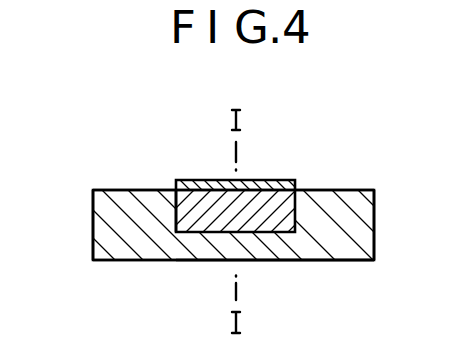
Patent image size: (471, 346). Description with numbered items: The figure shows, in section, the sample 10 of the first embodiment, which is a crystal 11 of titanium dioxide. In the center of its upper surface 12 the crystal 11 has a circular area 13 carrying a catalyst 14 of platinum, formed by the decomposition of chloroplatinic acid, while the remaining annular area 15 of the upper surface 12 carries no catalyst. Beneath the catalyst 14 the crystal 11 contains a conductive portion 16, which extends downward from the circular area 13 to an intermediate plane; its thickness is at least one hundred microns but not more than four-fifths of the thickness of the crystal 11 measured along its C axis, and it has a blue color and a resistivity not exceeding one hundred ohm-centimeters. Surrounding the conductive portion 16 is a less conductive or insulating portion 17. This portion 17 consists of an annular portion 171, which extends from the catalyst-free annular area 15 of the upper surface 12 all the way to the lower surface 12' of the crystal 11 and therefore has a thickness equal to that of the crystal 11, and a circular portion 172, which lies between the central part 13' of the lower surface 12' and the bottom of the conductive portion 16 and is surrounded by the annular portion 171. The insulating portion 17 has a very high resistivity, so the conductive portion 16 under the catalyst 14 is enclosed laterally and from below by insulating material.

The sample 10 is at (93, 254).
The crystal 11 is at (375, 199).
The upper surface 12 is at (335, 165).
The lower surface 12' is at (322, 286).
The circular area 13 is at (252, 185).
The central part of the lower surface 13' is at (235, 281).
The catalyst 14 is at (243, 180).
The annular area 15 is at (118, 190).
The conductive portion 16 is at (176, 213).
The less conductive or insulating portion 17 is at (352, 253).
The annular portion 171 is at (100, 221).
The circular portion 172 is at (200, 261).